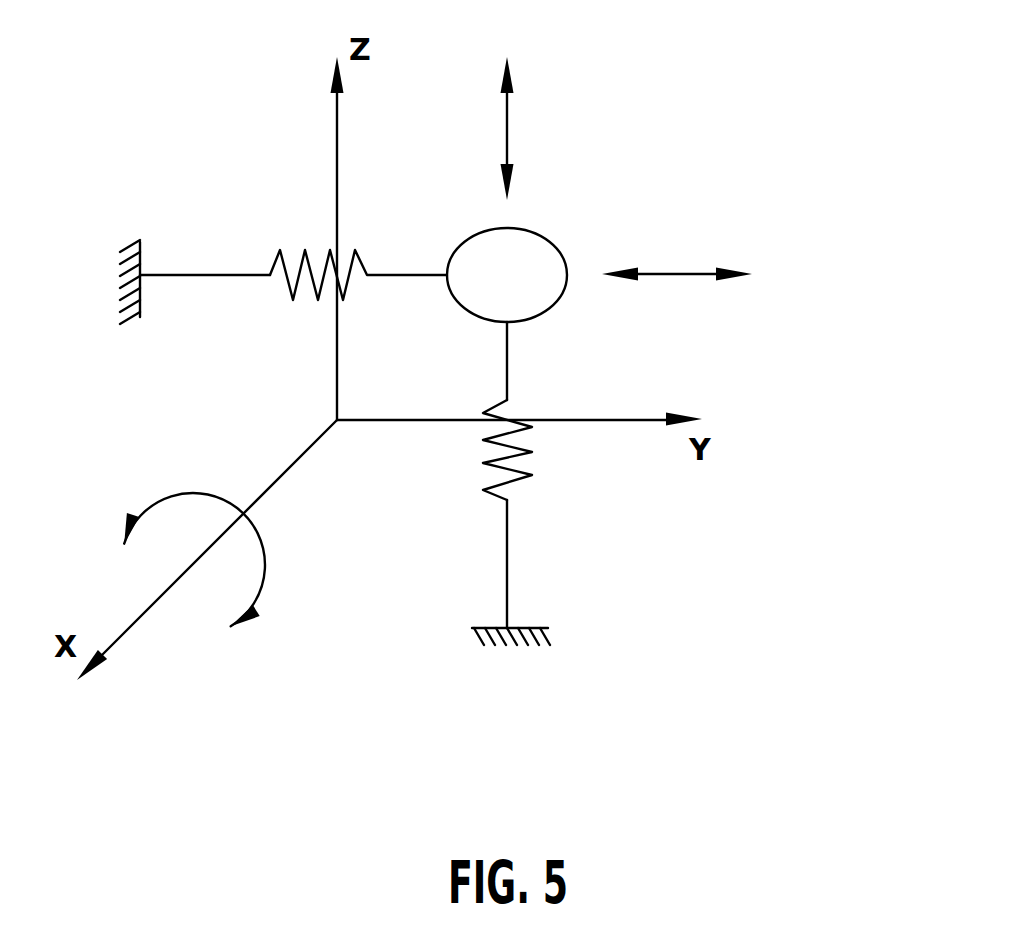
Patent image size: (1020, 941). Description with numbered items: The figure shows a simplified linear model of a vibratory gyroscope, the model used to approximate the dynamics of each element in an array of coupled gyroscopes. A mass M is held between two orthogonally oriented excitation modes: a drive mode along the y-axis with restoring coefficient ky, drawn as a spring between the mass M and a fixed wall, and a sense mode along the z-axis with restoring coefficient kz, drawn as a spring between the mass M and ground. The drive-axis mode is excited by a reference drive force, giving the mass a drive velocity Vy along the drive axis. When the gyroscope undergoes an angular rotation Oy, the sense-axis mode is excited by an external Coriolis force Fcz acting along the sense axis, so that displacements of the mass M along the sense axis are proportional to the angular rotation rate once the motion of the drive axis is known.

The restoring coefficient ky is at (283, 261).
The restoring coefficient kz is at (525, 483).
The mass M is at (507, 275).
The Coriolis force Fcz is at (503, 107).
The drive velocity along Y axis Vy is at (739, 269).
The angular rate about Y axis Oy is at (223, 588).